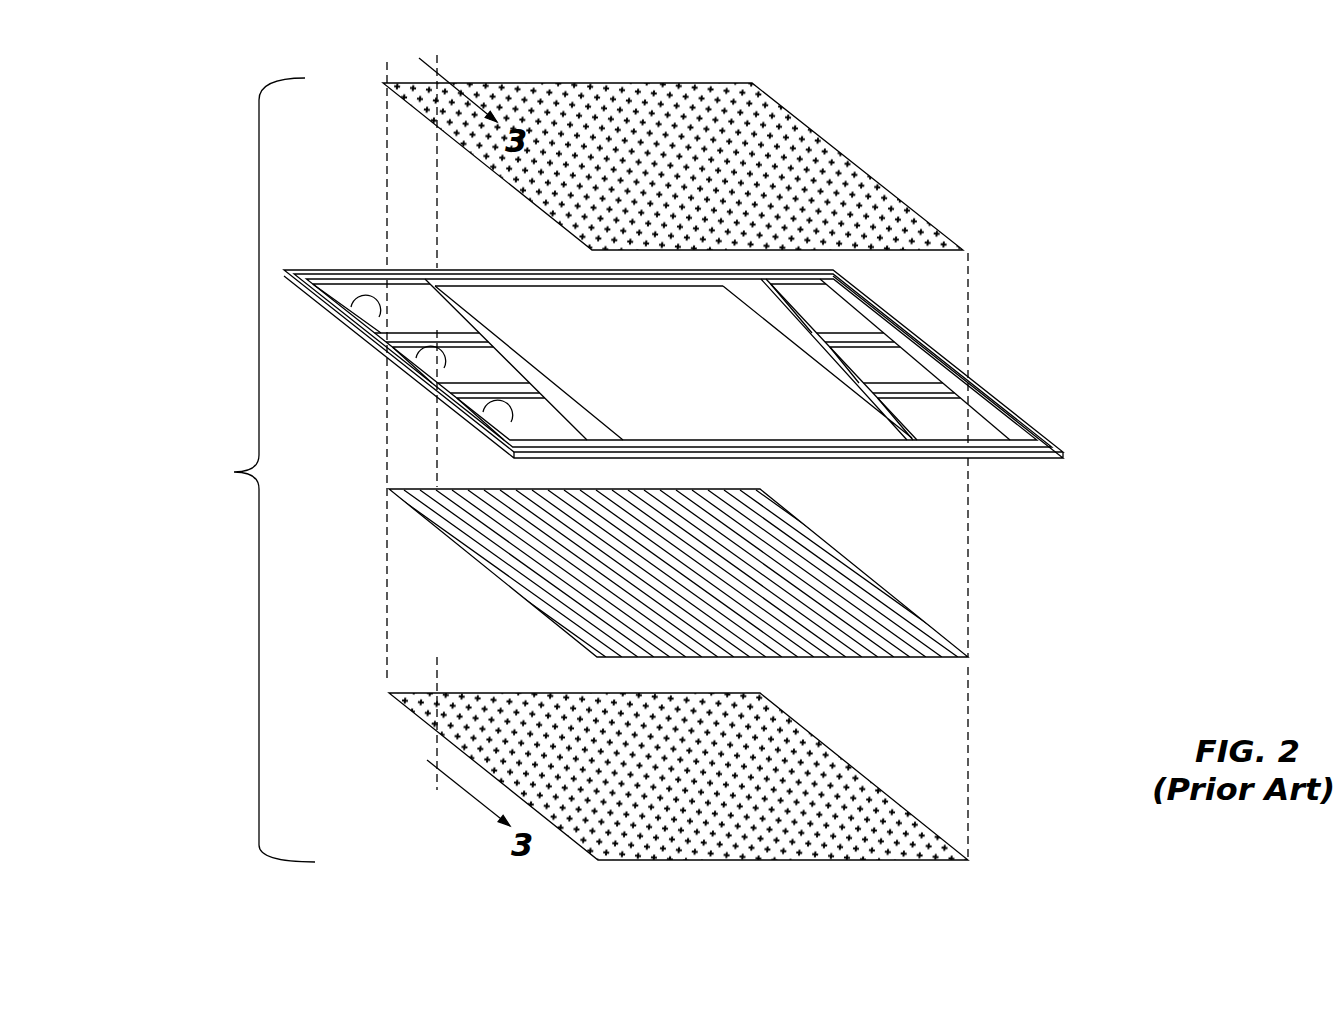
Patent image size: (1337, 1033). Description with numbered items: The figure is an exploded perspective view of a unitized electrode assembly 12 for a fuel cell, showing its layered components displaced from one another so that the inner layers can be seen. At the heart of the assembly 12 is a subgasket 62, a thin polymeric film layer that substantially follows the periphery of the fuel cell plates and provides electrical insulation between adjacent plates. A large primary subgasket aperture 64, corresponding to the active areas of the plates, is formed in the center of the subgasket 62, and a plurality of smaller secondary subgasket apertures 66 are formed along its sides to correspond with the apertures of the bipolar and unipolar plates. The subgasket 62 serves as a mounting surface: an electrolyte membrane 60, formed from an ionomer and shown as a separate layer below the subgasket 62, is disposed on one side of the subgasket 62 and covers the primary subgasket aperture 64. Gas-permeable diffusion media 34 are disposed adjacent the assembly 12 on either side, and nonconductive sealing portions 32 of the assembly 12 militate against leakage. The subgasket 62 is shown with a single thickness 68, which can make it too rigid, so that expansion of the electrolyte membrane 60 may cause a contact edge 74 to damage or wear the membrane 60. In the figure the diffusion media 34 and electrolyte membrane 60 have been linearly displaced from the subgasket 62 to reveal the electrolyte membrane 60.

The unitized electrode assembly 12 is at (234, 472).
The sealing portions 32 is at (1045, 428).
The diffusion media 34 is at (798, 178).
The electrolyte membrane 60 is at (803, 583).
The subgasket 62 is at (1013, 415).
The primary subgasket aperture 64 is at (807, 352).
The secondary subgasket apertures 66 is at (978, 402).
The single thickness 68 is at (1071, 459).
The contact edge 74 is at (753, 315).